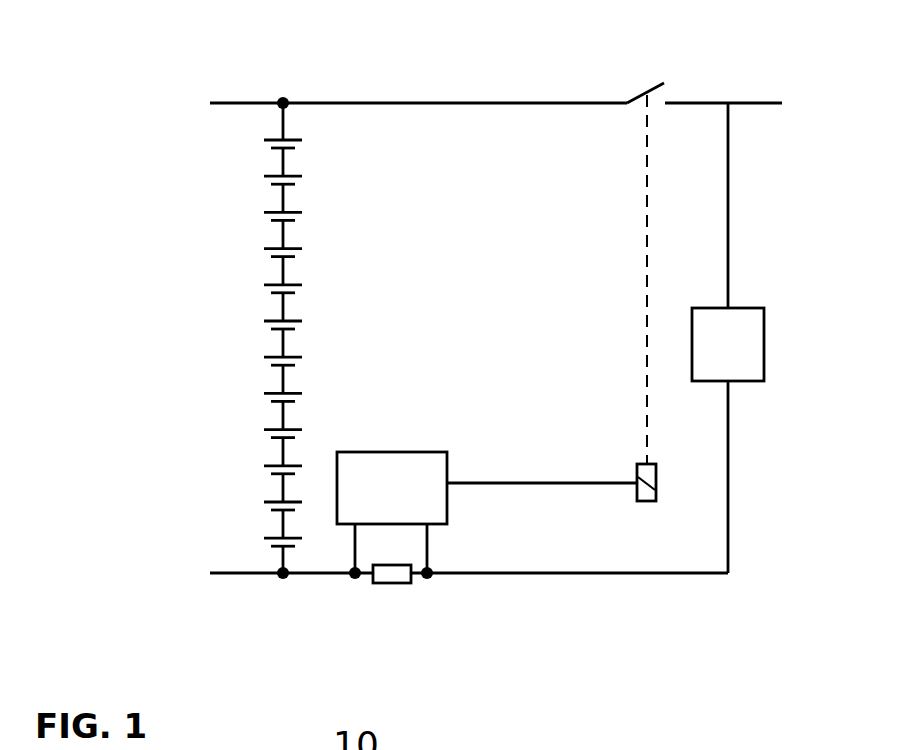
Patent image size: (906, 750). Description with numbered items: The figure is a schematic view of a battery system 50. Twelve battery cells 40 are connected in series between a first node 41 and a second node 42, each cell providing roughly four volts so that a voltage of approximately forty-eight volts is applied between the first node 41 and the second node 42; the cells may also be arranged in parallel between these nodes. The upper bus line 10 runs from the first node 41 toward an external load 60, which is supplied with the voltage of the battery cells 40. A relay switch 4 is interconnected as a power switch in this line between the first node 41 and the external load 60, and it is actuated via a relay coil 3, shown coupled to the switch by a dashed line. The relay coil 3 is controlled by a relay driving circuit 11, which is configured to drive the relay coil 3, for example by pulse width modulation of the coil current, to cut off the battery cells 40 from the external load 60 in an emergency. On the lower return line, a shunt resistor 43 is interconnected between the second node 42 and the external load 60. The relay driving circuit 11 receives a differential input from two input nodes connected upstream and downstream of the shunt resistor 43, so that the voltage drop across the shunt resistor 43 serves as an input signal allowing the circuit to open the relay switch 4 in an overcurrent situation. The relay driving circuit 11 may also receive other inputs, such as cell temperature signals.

The battery system 50 is at (408, 49).
The DC bus / supply line 10 is at (496, 103).
The relay switch 4 is at (665, 88).
The battery cells 40 is at (270, 247).
The first node 41 is at (289, 101).
The second node 42 is at (277, 575).
The shunt resistor 43 is at (385, 584).
The relay driving circuit 11 is at (487, 515).
The relay coil 3 is at (637, 488).
The external load 60 is at (728, 338).